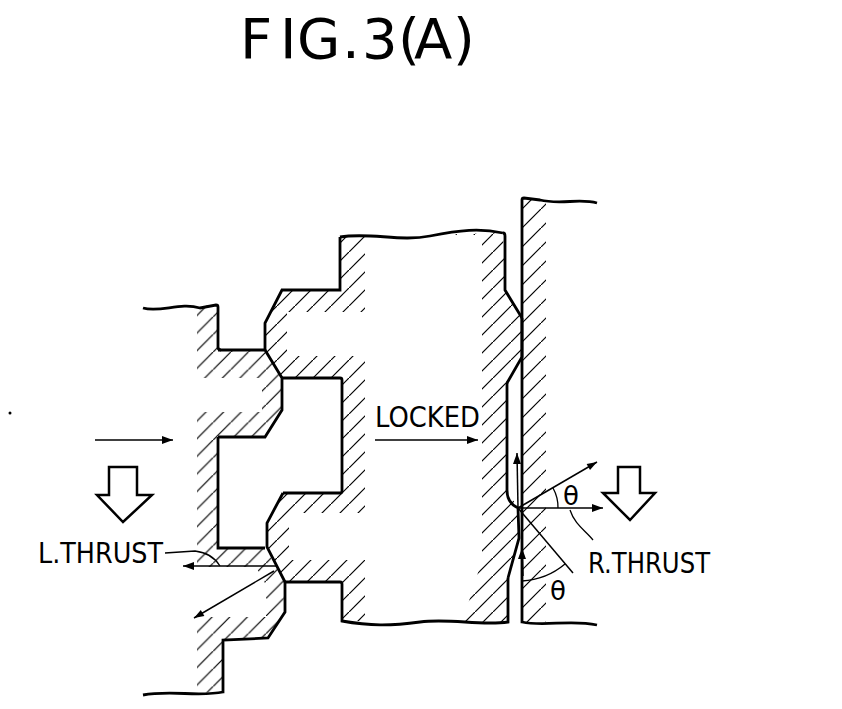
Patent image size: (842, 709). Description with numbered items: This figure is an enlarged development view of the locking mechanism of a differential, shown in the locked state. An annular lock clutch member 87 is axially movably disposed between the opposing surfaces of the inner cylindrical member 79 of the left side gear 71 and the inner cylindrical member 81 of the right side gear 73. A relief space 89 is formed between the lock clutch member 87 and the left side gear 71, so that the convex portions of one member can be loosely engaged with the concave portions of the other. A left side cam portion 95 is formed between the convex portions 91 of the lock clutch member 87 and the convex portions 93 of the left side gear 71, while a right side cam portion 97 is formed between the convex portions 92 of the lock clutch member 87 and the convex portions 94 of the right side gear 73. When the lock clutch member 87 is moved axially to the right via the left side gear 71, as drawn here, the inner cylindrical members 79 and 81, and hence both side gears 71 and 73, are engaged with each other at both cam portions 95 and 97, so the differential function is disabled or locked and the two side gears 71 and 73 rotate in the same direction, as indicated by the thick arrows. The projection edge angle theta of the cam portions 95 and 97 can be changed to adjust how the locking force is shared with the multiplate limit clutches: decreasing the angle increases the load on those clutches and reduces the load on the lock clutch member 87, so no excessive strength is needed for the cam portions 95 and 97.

The inner cylindrical member 79 is at (176, 454).
The left side gear 71 is at (176, 454).
The convex portions of the left side gear 93 is at (243, 378).
The relief space 89 is at (297, 282).
The lock clutch member 87 is at (432, 387).
The convex portions of the right side gear 94 is at (510, 277).
The convex portions of the lock clutch member (right side) 92 is at (508, 338).
The convex portions of the lock clutch member (left side) 91 is at (311, 360).
The left side cam portion 95 is at (313, 557).
The right side cam portion 97 is at (495, 522).
The inner cylindrical member 81 is at (622, 381).
The right side gear 73 is at (565, 215).